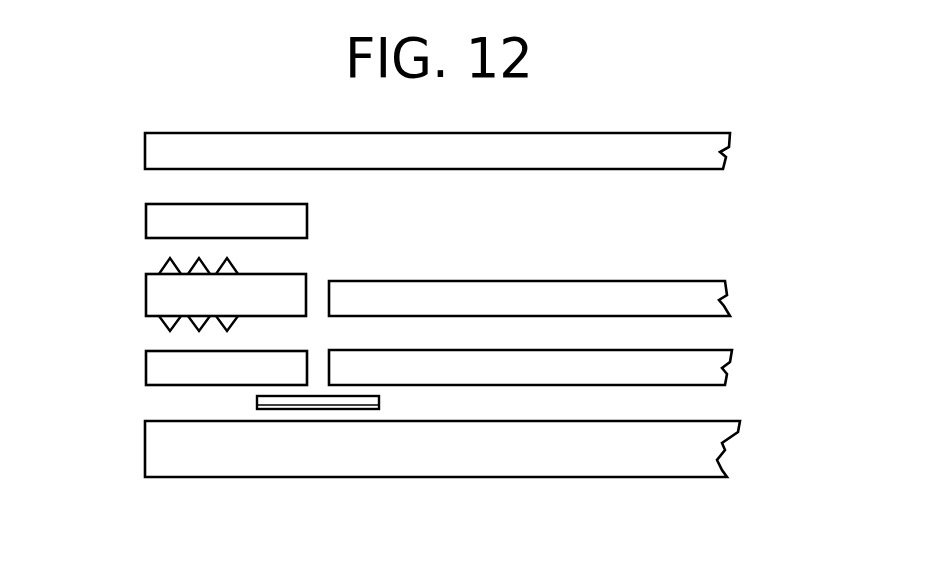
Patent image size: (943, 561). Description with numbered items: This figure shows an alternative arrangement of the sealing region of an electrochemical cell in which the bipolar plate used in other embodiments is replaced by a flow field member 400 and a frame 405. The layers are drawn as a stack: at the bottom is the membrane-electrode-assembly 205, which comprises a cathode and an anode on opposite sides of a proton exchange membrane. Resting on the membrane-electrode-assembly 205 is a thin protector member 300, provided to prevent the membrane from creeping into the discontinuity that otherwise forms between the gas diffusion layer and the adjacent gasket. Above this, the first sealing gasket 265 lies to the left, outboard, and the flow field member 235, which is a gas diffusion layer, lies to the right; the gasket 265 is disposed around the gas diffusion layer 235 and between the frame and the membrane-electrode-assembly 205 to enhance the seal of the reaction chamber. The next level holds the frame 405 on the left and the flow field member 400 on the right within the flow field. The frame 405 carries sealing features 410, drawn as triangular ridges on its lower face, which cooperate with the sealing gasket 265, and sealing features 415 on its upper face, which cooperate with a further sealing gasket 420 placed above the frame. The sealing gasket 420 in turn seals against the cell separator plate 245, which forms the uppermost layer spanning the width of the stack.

The cell separator plate 245 is at (700, 153).
The sealing gasket 420 is at (170, 228).
The sealing features 415 is at (160, 270).
The frame 405 is at (170, 297).
The sealing features 410 is at (162, 321).
The flow field member 400 is at (698, 295).
The first sealing gasket 265 is at (158, 370).
The flow field member 235 is at (707, 370).
The protector member 300 is at (379, 402).
The membrane-electrode-assembly 205 is at (708, 451).